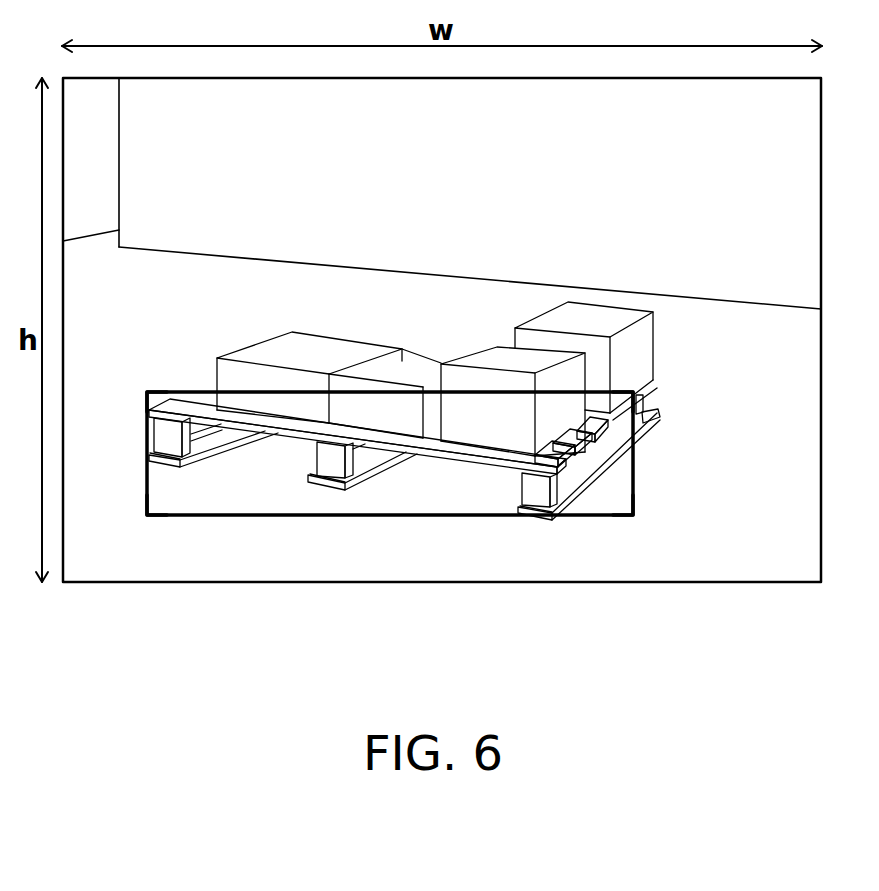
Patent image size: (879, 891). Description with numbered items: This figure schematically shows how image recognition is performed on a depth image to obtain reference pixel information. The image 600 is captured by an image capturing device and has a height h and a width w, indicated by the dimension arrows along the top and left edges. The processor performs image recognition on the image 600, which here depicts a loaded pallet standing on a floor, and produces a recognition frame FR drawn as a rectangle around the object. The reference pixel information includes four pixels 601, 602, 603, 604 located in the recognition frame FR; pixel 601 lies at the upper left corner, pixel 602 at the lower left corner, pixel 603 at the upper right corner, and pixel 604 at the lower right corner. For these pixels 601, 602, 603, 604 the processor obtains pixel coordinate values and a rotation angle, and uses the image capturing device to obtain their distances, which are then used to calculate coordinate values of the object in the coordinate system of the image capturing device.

The image 600 is at (483, 583).
The pixel 601 is at (147, 392).
The pixel 602 is at (147, 515).
The pixel 603 is at (633, 393).
The pixel 604 is at (633, 515).
The recognition frame FR is at (299, 515).